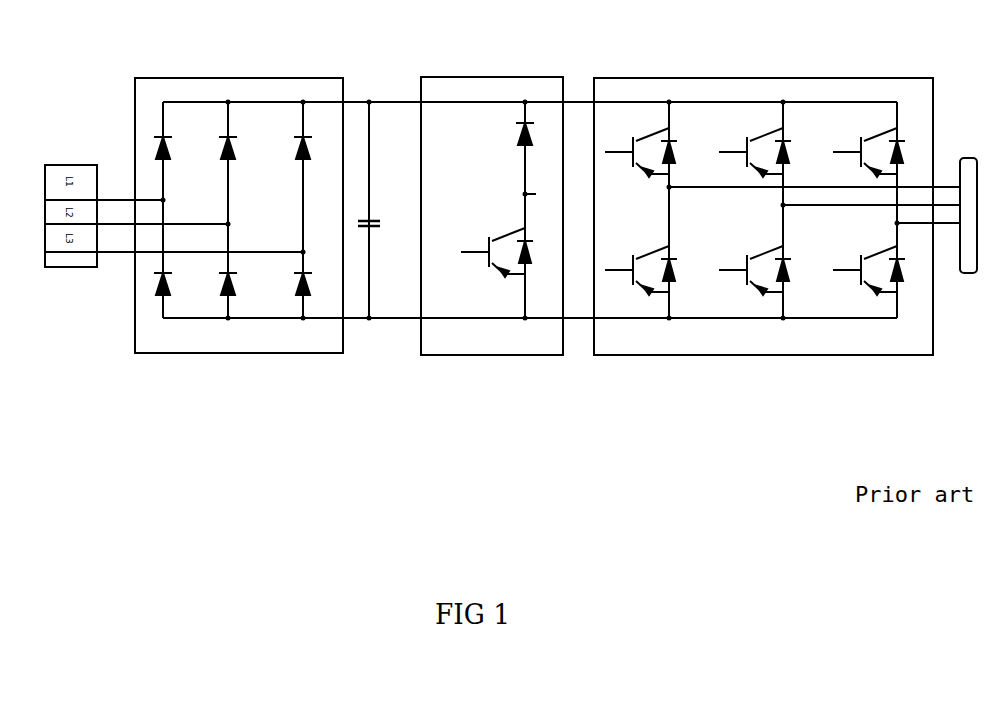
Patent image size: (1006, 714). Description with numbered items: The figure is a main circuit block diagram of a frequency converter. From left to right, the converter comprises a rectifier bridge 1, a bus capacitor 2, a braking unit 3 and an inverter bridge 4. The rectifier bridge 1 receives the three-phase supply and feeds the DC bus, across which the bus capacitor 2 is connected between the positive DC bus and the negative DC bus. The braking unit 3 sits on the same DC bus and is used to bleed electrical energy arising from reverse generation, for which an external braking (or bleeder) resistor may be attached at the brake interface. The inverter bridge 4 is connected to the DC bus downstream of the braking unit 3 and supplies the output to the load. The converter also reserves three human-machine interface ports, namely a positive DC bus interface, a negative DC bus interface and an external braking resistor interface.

The rectifier bridge 1 is at (283, 78).
The bus capacitor 2 is at (381, 222).
The braking unit 3 is at (497, 78).
The inverter bridge 4 is at (757, 78).